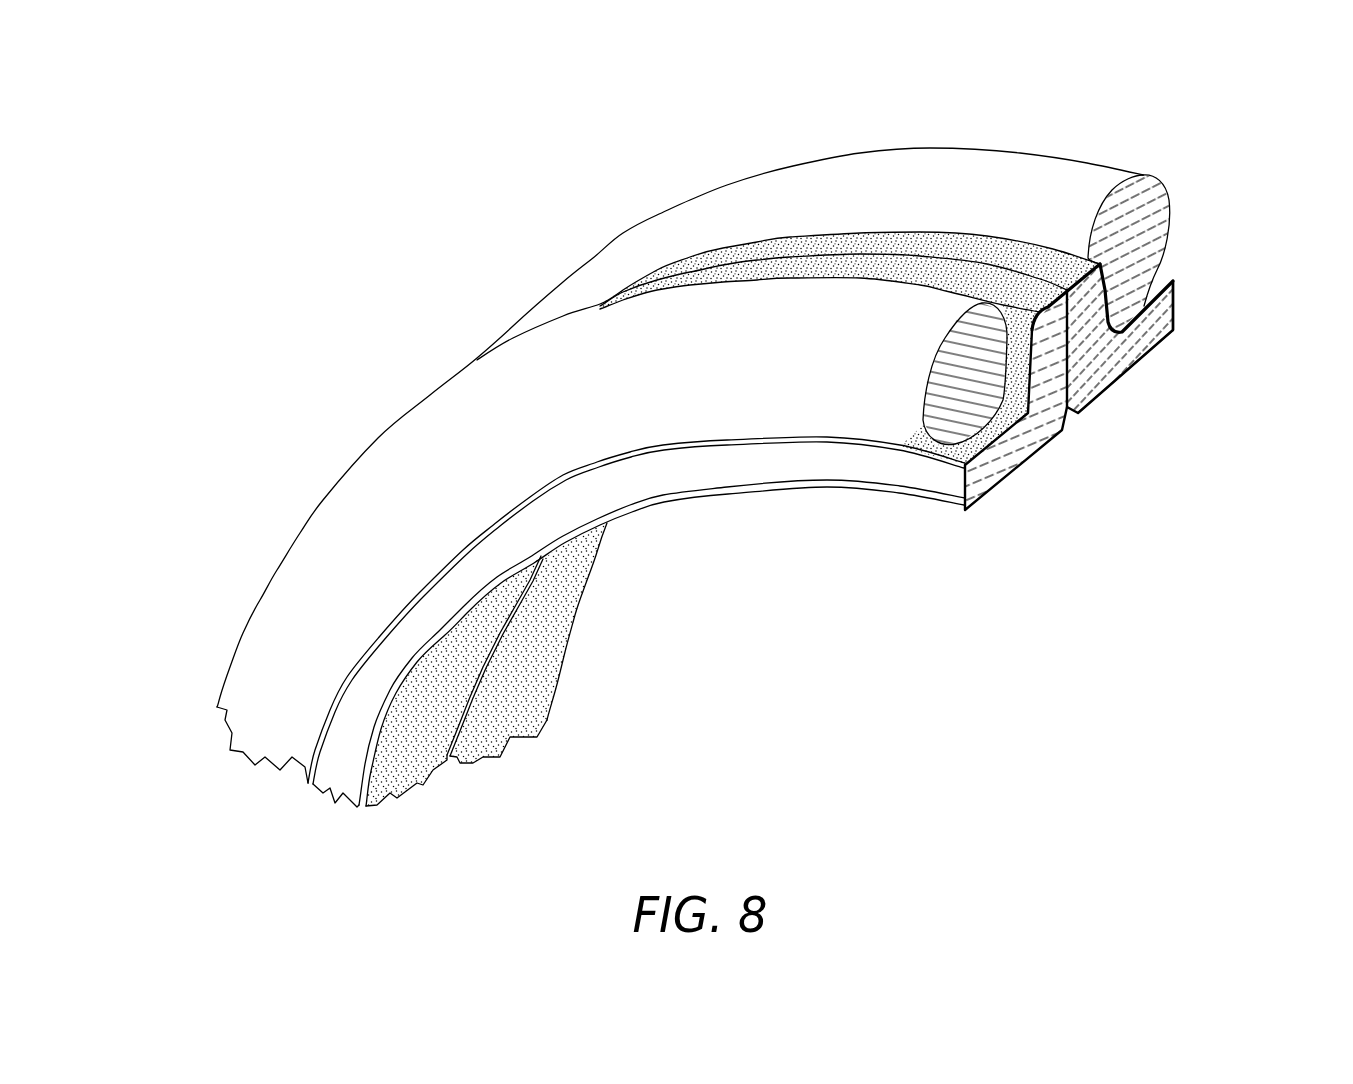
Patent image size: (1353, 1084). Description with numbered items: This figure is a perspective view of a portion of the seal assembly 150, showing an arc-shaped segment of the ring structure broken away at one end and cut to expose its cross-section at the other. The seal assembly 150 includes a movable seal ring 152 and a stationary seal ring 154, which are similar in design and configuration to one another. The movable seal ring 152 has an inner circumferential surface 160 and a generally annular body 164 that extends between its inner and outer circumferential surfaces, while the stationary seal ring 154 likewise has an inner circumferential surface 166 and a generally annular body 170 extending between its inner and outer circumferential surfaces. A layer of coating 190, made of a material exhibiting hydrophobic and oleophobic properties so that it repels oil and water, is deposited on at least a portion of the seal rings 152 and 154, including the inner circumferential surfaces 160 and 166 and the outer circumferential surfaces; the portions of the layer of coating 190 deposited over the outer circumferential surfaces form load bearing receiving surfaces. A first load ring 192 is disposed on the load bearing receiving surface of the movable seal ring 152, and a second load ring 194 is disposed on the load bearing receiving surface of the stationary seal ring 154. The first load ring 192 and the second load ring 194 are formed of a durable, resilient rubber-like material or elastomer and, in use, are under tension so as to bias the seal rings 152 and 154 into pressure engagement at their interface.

The seal assembly 150 is at (292, 178).
The movable seal ring 152 is at (1034, 432).
The stationary seal ring 154 is at (1157, 335).
The inner circumferential surface 160 is at (990, 483).
The generally annular body 164 is at (717, 468).
The inner circumferential surface 166 is at (1134, 344).
The generally annular body 170 is at (1173, 307).
The layer of coating 190 is at (950, 248).
The first load ring 192 is at (900, 352).
The second load ring 194 is at (1083, 180).